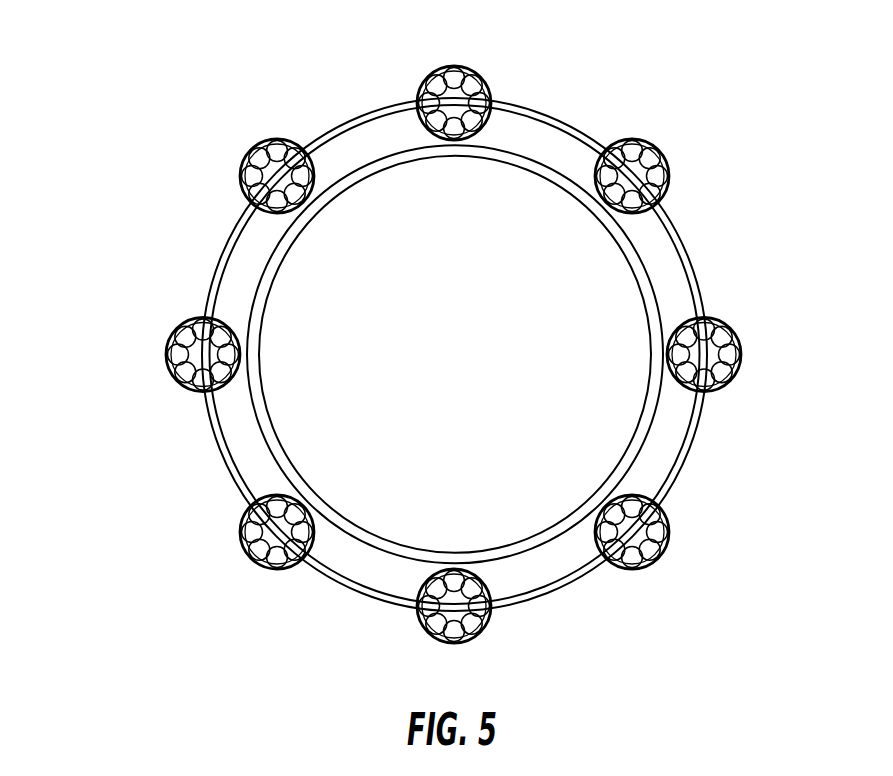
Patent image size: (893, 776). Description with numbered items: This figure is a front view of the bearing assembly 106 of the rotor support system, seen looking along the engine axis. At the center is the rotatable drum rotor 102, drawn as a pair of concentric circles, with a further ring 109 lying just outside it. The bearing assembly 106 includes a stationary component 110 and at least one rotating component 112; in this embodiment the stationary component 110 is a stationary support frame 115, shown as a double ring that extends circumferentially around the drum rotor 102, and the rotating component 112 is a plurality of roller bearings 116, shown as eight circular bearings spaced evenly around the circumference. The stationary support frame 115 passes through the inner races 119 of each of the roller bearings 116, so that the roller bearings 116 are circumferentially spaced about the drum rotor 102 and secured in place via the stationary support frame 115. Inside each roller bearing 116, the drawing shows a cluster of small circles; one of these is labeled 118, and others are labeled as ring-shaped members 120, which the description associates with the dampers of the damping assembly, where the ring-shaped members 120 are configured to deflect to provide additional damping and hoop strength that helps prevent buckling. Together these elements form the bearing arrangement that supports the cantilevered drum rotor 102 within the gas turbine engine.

The rotatable drum rotor 102 is at (470, 359).
The bearing assembly 106 is at (162, 186).
The inner layer 109 is at (287, 222).
The stationary component 110 is at (377, 354).
The stationary support frame 115 is at (208, 257).
The rotating component 112 is at (442, 60).
The roller bearings 116 is at (439, 339).
The conductor 118 is at (229, 573).
The inner races 119 is at (722, 352).
The ring-shaped members 120 is at (278, 600).